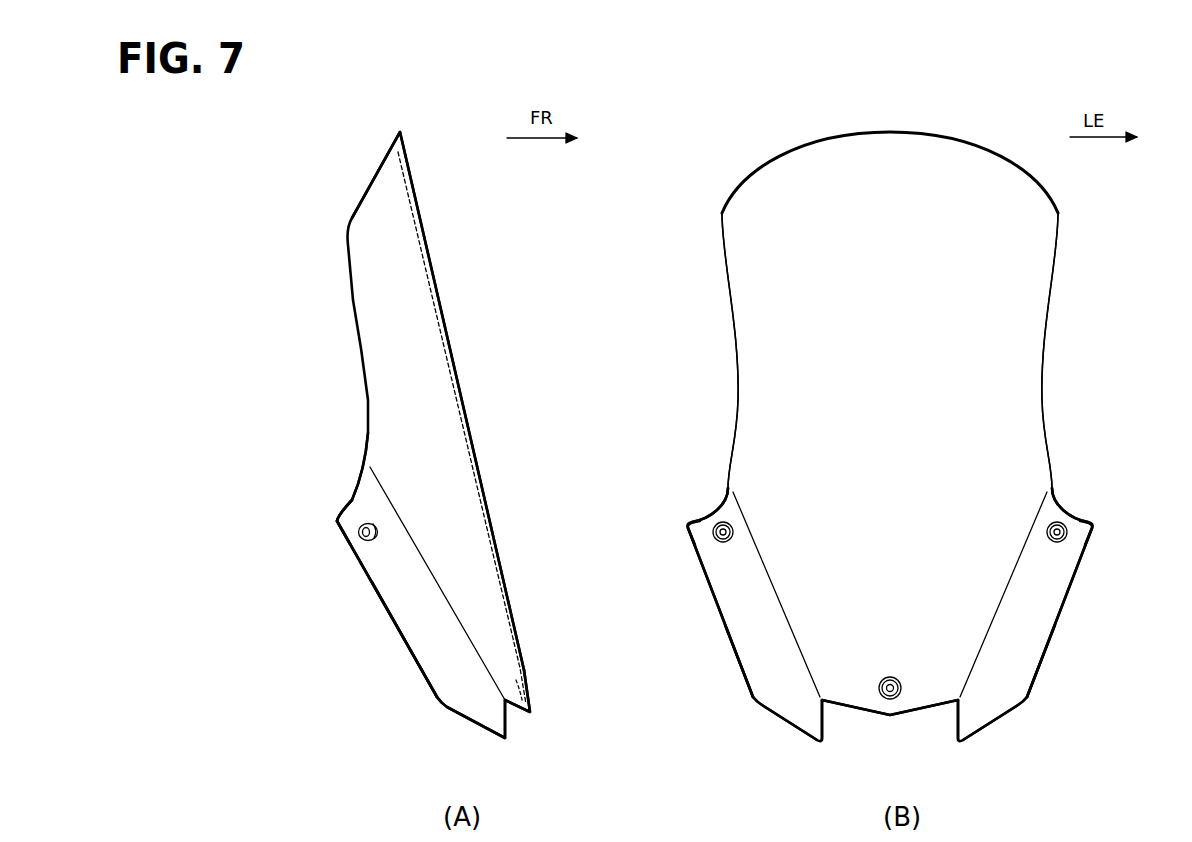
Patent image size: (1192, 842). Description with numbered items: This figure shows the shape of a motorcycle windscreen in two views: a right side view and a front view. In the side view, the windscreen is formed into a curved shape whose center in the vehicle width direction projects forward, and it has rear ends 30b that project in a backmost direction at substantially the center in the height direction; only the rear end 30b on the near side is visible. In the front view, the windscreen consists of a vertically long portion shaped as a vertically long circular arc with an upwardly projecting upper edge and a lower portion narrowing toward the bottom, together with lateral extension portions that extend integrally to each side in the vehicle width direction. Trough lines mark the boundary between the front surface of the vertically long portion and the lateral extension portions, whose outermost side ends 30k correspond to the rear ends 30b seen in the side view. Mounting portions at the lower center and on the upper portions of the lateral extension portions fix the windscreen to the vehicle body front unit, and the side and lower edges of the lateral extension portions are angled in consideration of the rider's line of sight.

The rear end 30b is at (335, 523).
The side end 30k is at (688, 522).